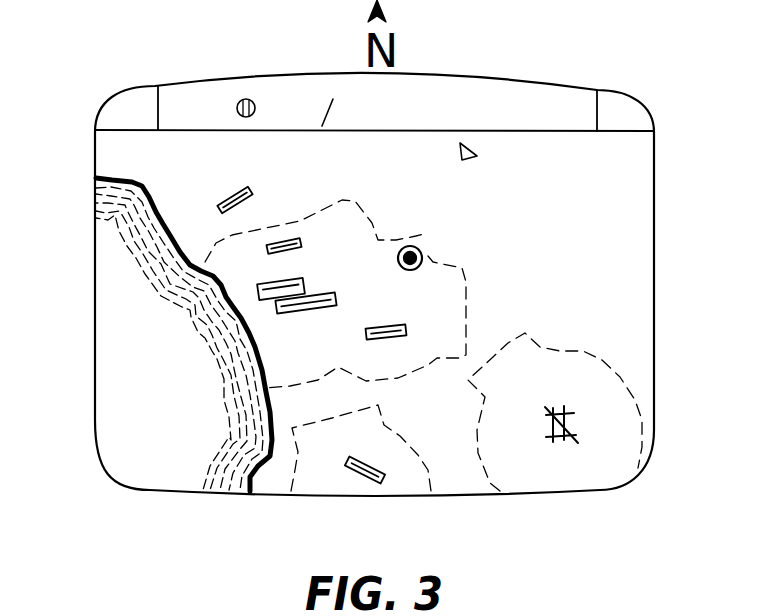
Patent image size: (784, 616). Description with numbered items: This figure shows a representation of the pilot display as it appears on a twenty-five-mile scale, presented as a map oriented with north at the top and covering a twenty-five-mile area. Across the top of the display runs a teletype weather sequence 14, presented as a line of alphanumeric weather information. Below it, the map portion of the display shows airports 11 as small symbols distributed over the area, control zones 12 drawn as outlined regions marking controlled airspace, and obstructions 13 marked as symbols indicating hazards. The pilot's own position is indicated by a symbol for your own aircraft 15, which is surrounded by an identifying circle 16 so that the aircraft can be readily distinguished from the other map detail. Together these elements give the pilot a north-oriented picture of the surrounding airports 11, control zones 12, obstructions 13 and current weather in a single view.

The airports 11 is at (215, 198).
The control zones 12 is at (200, 338).
The obstructions 13 is at (462, 147).
The teletype weather sequence 14 is at (290, 90).
The symbol for your own aircraft 15 is at (424, 250).
The identifying circle 16 is at (424, 240).